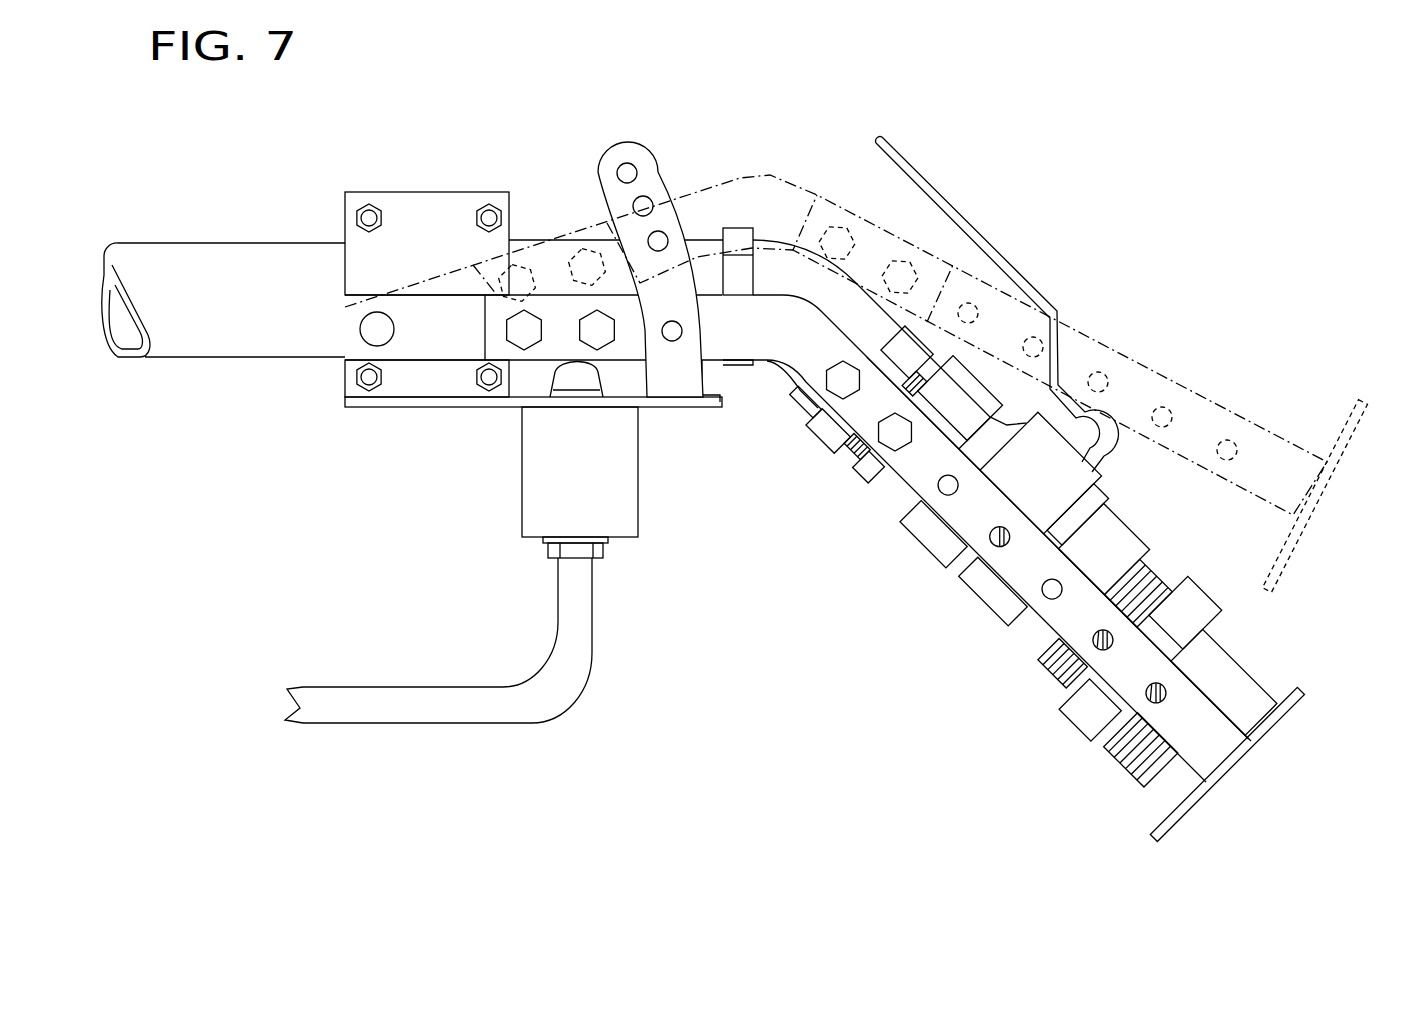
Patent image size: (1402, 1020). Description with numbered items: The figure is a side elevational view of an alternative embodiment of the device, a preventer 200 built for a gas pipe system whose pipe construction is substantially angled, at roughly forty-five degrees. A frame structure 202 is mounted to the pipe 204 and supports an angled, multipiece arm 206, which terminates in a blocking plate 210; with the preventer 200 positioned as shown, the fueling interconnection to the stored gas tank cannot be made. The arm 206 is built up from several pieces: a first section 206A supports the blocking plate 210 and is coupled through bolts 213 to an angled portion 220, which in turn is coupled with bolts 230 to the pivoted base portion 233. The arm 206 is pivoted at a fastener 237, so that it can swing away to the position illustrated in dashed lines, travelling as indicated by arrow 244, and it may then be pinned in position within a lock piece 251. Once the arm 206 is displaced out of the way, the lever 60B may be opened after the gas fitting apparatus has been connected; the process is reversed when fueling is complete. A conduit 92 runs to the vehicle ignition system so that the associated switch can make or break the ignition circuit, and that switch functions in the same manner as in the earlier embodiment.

The pipe 204 is at (218, 270).
The pivoted base portion 233 is at (438, 330).
The fastener 237 is at (360, 330).
The frame structure 202 is at (390, 420).
The bolts 230 is at (518, 340).
The conduit 92 is at (577, 664).
The angled portion 220 is at (742, 332).
The lock piece 251 is at (655, 128).
The lever 60B is at (927, 181).
The arm 206 is at (1195, 355).
The preventer 200 is at (808, 460).
The bolts 213 is at (888, 442).
The first section 206A is at (952, 525).
The arrow 244 is at (1157, 590).
The blocking plate 210 is at (1260, 733).